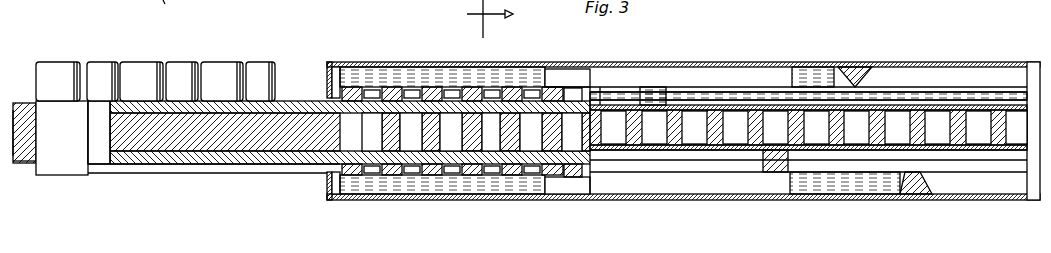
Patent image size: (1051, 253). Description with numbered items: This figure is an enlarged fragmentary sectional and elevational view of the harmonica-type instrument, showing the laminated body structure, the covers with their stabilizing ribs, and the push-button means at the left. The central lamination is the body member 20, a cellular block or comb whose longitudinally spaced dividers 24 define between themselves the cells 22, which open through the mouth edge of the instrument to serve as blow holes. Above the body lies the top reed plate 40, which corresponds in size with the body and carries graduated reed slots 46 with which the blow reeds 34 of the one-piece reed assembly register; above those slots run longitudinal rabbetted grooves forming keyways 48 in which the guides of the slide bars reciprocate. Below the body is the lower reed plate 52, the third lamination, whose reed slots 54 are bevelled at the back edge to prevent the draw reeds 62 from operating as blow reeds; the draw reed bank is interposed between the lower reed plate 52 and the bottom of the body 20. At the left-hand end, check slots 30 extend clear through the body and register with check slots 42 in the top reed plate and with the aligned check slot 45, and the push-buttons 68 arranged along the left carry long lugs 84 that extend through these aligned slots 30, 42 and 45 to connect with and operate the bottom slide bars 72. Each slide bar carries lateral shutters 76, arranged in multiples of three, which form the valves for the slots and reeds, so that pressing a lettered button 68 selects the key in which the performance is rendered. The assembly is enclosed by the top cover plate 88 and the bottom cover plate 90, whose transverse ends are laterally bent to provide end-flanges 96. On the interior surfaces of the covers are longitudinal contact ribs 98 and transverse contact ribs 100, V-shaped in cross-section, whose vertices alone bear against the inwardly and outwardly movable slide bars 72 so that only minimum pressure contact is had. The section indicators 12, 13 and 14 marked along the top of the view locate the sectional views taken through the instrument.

The section line 12 is at (476, 25).
The section line 13 is at (149, 7).
The section line 14 is at (461, 19).
The body member 20 is at (12, 136).
The cells 22 is at (903, 127).
The dividers 24 is at (682, 128).
The check slots 30 is at (102, 140).
The reeds 34 is at (377, 110).
The top reed plate 40 is at (27, 101).
The check slots 42 is at (100, 108).
The check slot 45 is at (105, 160).
The reed slots 46 is at (365, 110).
The keyways 48 is at (747, 107).
The lower reed plate 52 is at (28, 165).
The reed slots 54 is at (372, 162).
The reeds 62 is at (371, 148).
The push-buttons 68 is at (227, 75).
The slide bars 72 is at (290, 170).
The shutters 76 is at (575, 168).
The lugs 84 is at (69, 140).
The top cover plate 88 is at (670, 62).
The bottom cover plate 90 is at (688, 199).
The end-flanges 96 is at (326, 88).
The longitudinal contact ribs 98 is at (507, 77).
The transverse contact ribs 100 is at (863, 77).